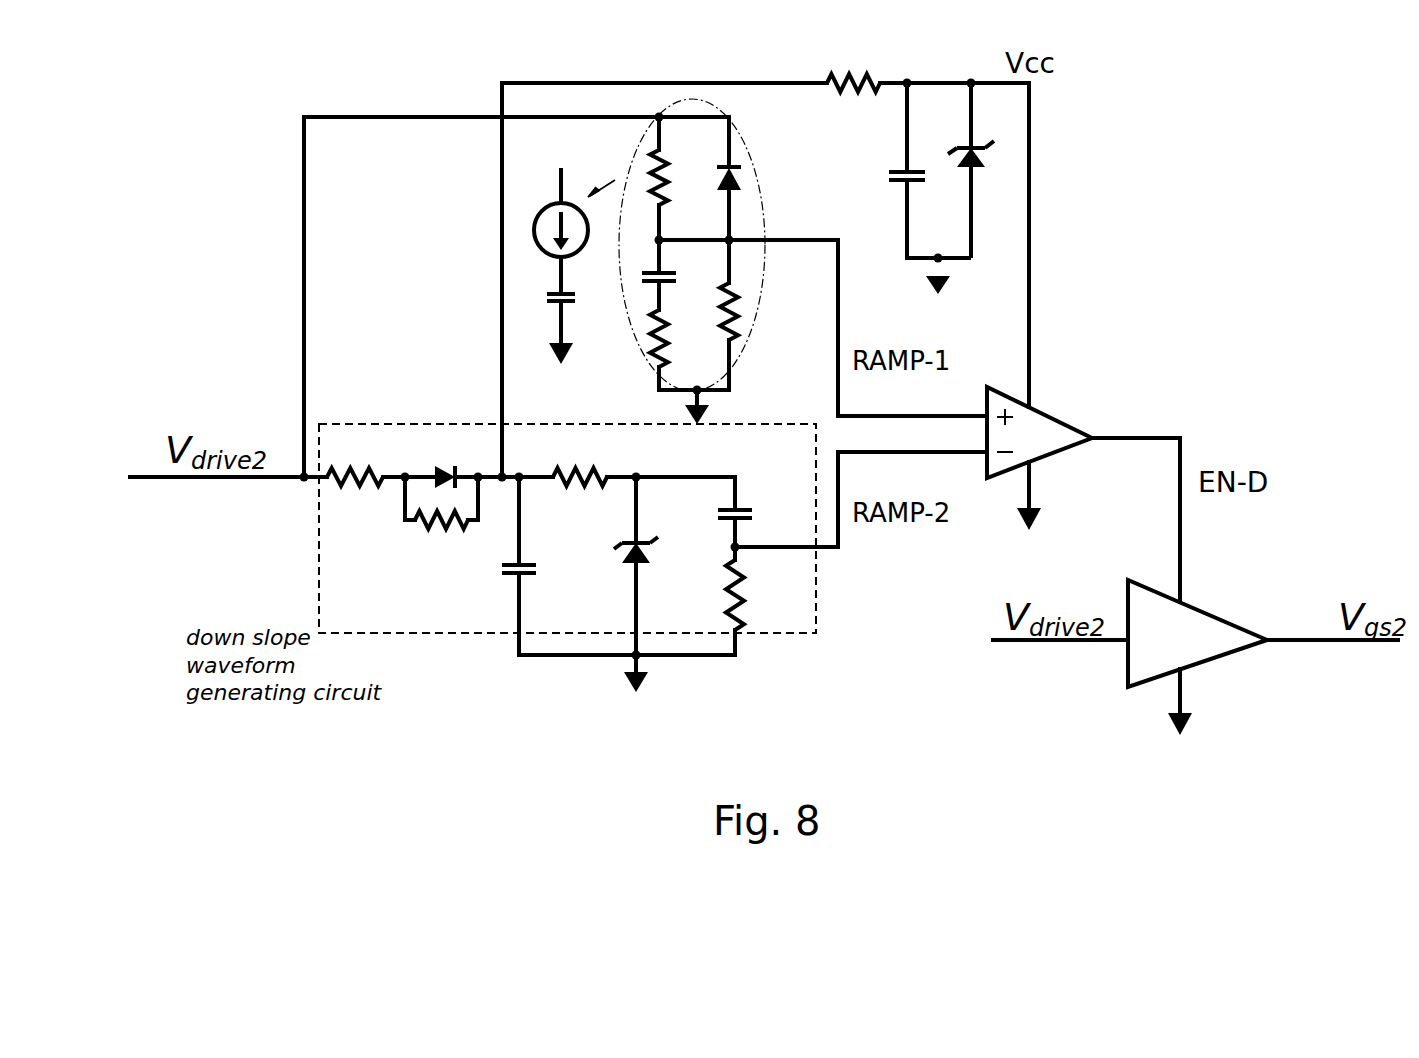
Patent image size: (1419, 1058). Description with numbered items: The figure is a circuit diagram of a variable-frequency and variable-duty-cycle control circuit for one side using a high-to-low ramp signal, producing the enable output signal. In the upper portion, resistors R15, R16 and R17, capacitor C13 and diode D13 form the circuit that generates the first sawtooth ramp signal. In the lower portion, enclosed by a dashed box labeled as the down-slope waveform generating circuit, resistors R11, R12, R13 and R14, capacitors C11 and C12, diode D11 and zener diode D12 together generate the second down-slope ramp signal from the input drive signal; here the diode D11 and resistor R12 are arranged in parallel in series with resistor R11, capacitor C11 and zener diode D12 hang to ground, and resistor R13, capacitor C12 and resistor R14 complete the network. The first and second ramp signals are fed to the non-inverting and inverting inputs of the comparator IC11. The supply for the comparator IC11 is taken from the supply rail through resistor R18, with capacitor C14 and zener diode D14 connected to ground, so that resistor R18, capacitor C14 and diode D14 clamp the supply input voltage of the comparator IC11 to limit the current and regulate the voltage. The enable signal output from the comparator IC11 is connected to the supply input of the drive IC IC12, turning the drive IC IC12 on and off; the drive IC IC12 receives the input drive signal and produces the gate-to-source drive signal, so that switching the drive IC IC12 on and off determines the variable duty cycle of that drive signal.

The resistor R11 is at (357, 457).
The diode D11 is at (451, 456).
The resistor R12 is at (438, 543).
The capacitor C11 is at (499, 587).
The resistor R13 is at (584, 457).
The zener diode D12 is at (663, 561).
The capacitor C12 is at (763, 510).
The resistor R14 is at (768, 595).
The resistor R15 is at (686, 186).
The capacitor C13 is at (685, 277).
The resistor R16 is at (686, 338).
The diode D13 is at (767, 185).
The resistor R17 is at (765, 311).
The resistor R18 is at (853, 63).
The capacitor C14 is at (907, 170).
The diode D14 is at (954, 170).
The comparator IC11 is at (1057, 428).
The drive IC IC12 is at (1198, 628).